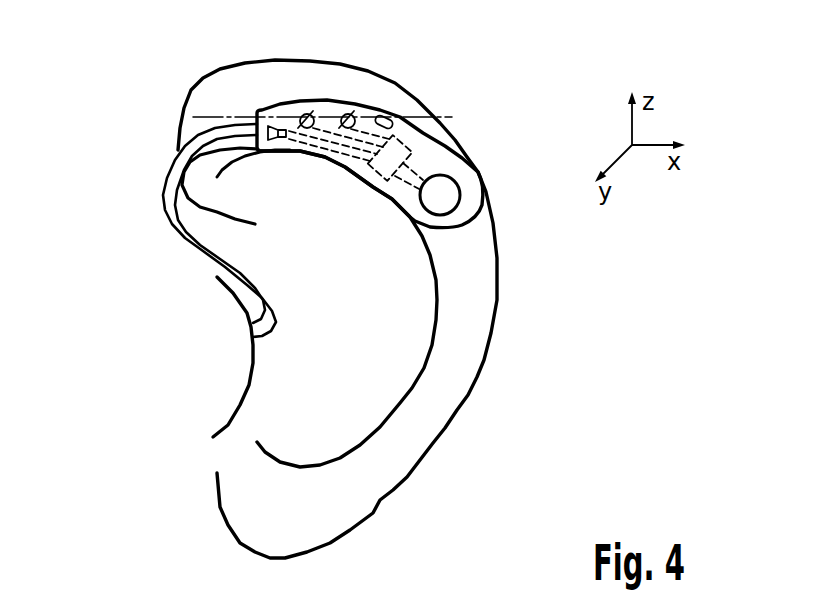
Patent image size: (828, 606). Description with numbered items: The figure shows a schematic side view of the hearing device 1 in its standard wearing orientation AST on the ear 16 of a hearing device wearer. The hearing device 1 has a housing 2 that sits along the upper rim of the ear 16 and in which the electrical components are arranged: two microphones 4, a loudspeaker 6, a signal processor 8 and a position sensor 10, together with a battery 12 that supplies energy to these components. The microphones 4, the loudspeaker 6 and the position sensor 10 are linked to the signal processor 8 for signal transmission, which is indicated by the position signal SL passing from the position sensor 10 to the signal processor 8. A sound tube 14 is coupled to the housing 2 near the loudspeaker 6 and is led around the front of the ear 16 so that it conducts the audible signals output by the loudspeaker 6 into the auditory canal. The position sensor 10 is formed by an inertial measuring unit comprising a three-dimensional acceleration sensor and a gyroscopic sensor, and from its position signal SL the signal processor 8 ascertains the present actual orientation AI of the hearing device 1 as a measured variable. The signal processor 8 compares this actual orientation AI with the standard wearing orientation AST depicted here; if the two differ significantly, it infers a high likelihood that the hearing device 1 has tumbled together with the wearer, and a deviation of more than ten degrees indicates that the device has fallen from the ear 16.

The hearing device 1 is at (422, 97).
The housing 2 is at (442, 142).
The microphones 4 is at (306, 114).
The loudspeaker 6 is at (277, 124).
The signal processor 8 is at (414, 160).
The position sensor 10 is at (384, 114).
The battery 12 is at (461, 194).
The sound tube 14 is at (165, 185).
The ear 16 is at (525, 294).
The position signal SL is at (380, 121).
The actual orientation AI is at (580, 20).
The standard wearing orientation AST is at (578, 35).